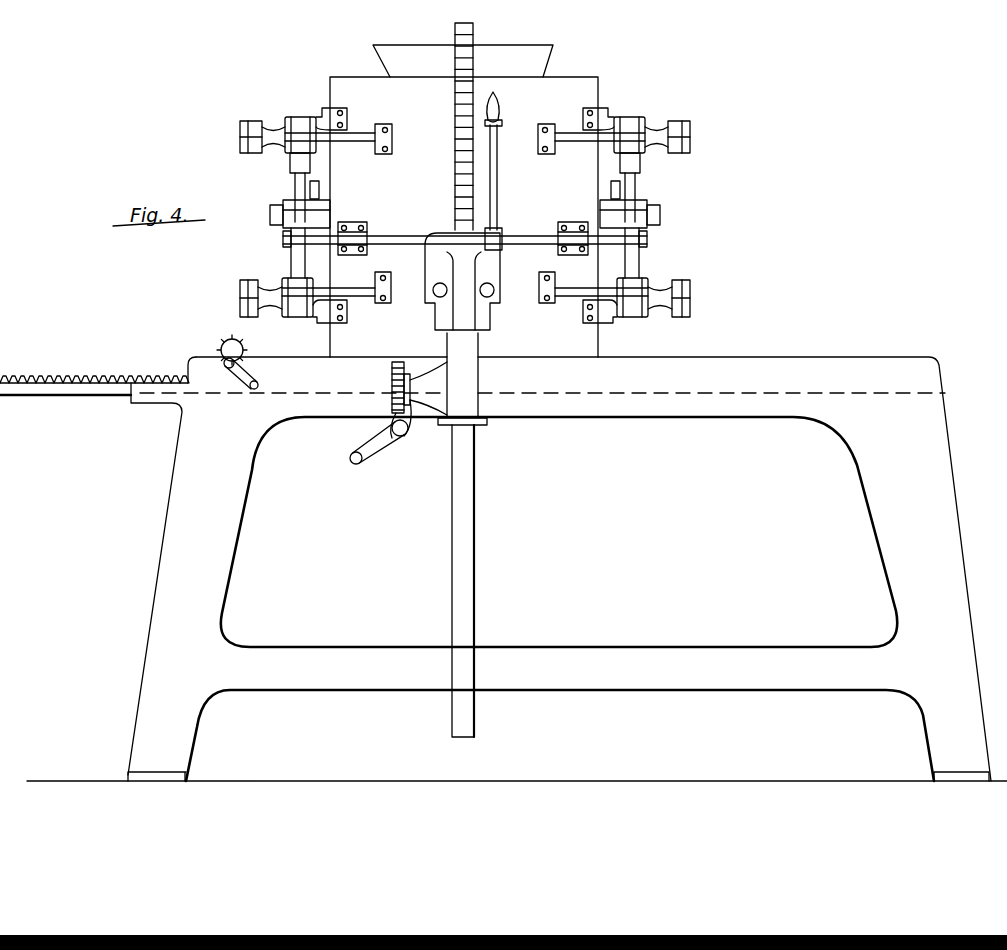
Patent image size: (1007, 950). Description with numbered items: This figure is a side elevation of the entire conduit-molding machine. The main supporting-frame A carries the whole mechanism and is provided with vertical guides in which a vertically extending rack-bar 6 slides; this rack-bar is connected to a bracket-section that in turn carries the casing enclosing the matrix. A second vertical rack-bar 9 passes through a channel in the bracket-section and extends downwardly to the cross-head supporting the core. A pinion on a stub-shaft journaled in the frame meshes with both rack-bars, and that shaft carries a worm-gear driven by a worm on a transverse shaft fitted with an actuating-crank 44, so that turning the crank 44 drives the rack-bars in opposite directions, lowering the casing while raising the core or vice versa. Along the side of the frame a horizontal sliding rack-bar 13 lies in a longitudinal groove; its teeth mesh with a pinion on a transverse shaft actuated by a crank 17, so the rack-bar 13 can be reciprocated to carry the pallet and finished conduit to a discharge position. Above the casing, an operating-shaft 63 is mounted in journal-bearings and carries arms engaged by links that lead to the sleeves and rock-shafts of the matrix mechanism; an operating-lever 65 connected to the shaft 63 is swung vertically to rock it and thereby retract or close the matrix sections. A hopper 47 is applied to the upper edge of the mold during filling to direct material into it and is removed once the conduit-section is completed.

The main supporting-frame A is at (559, 569).
The rack-bar 6 is at (462, 512).
The rack-bar 9 is at (455, 190).
The horizontal sliding rack-bar 13 is at (84, 397).
The crank 17 is at (248, 388).
The actuating-crank 44 is at (372, 445).
The hopper 47 is at (463, 61).
The operating-shaft 63 is at (465, 276).
The operating-lever 65 is at (498, 176).